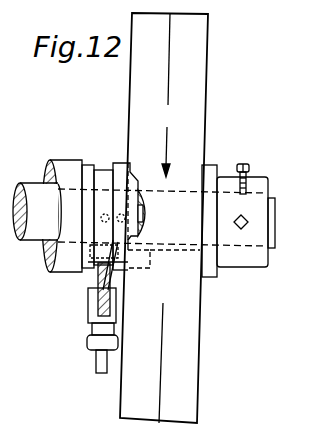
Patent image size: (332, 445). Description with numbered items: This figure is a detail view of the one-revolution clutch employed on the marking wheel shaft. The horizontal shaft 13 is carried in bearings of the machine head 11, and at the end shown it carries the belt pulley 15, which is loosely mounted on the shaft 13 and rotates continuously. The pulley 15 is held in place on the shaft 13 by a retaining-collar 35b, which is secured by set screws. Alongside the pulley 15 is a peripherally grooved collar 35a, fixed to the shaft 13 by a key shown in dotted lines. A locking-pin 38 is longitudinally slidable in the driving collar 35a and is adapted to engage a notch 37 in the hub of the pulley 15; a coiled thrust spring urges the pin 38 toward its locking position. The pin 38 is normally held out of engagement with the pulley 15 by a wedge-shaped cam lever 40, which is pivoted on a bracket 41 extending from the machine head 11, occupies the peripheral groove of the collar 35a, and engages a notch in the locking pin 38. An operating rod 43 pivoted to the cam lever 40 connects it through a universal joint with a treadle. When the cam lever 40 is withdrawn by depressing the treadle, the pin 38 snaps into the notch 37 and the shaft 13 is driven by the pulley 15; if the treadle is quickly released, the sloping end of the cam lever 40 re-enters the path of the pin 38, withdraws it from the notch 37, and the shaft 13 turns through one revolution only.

The machine head 11 is at (64, 166).
The cross-shaft or horizontal shaft 13 is at (284, 221).
The belt pulley 15 is at (164, 218).
The peripherally grooved collar 35a is at (105, 166).
The retaining-collar 35b is at (248, 262).
The notch 37 is at (152, 213).
The locking-pin 38 is at (140, 265).
The wedge-shaped cam lever 40 is at (110, 280).
The bracket 41 is at (66, 272).
The operating rod 43 is at (100, 373).